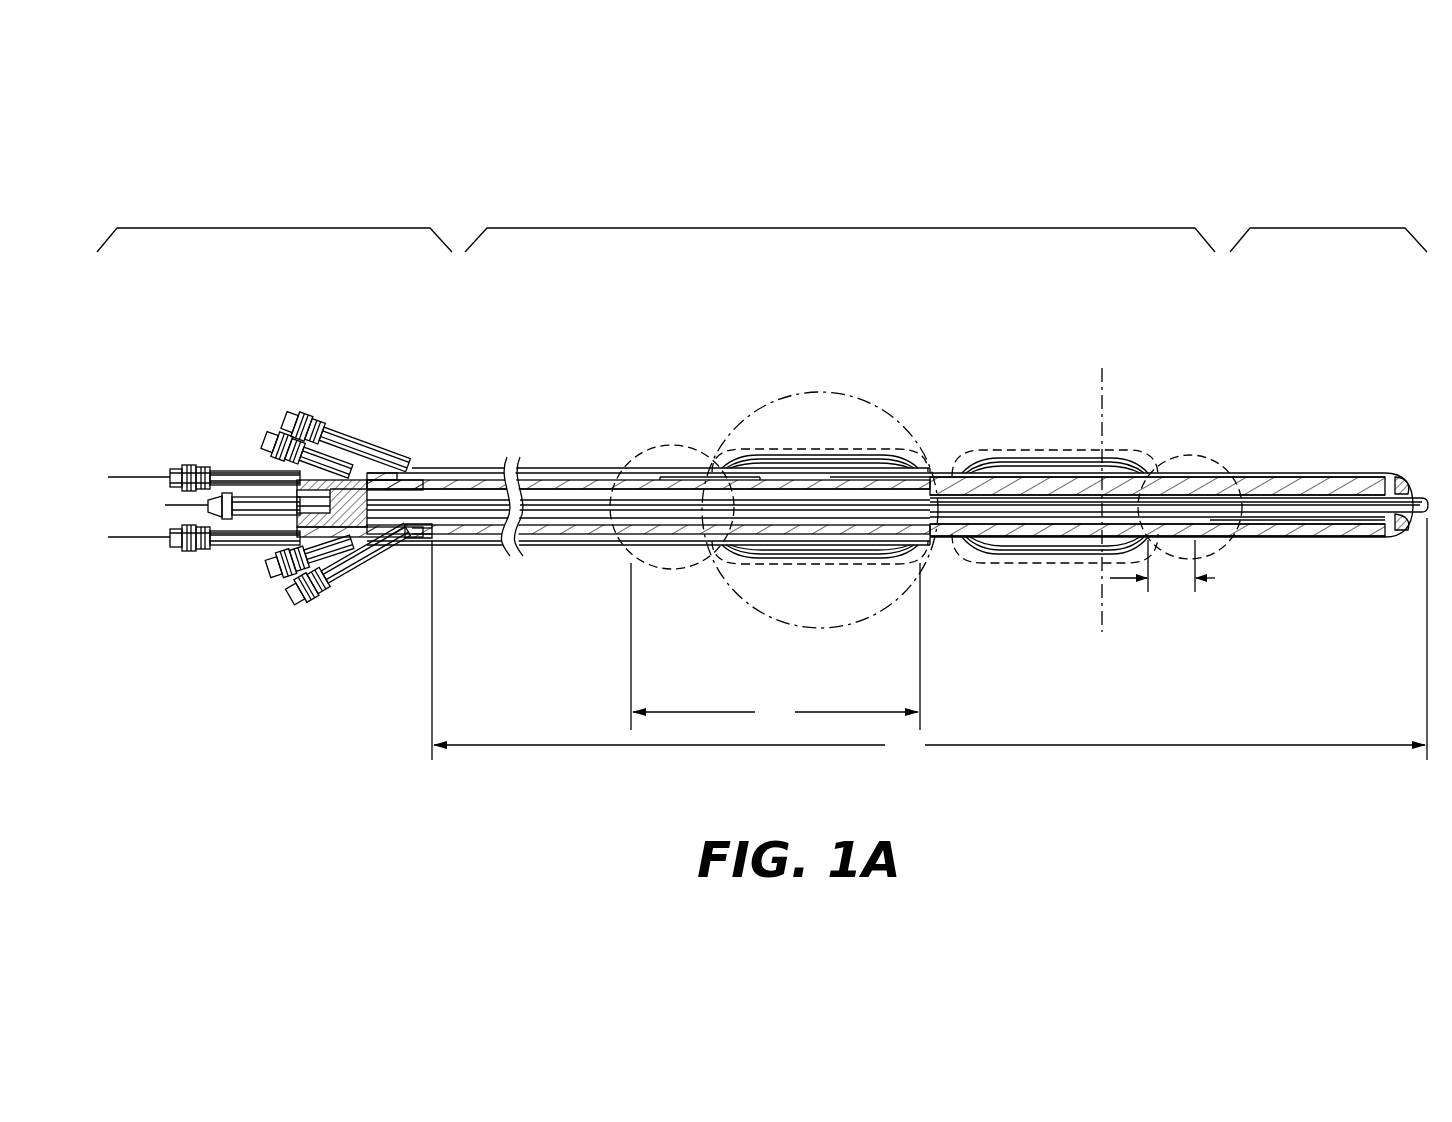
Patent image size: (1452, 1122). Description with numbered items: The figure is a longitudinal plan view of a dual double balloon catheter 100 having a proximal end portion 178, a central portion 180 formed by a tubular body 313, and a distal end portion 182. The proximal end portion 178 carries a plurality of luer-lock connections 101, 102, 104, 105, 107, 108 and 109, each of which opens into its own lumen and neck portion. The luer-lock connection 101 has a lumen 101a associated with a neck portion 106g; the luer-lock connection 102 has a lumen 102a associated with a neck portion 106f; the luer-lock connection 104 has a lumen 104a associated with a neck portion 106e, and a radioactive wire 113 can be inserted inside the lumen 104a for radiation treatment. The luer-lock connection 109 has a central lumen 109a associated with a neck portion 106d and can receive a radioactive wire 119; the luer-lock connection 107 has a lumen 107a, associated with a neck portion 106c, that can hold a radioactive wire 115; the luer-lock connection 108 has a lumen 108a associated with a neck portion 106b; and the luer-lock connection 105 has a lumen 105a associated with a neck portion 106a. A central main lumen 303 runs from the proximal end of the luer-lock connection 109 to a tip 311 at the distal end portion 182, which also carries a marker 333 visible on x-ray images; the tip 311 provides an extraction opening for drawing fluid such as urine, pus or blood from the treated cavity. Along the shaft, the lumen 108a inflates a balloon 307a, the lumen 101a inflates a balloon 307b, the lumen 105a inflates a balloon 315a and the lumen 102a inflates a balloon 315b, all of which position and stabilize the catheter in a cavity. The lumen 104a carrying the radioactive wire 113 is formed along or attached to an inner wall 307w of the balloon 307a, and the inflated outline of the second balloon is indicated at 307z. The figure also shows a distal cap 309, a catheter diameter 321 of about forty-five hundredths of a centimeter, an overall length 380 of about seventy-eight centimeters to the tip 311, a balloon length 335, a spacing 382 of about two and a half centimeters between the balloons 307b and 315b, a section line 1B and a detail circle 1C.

The dual double balloon catheter 100 is at (1040, 130).
The proximal end portion 178 is at (285, 227).
The central portion 180 is at (777, 227).
The distal end portion 182 is at (1287, 227).
The luer-lock connection 101 is at (312, 584).
The lumen 101a is at (295, 594).
The luer-lock connection 102 is at (272, 576).
The lumen 102a is at (273, 567).
The luer-lock connection 104 is at (178, 552).
The lumen 104a is at (838, 455).
The luer-lock connection 105 is at (335, 440).
The lumen 105a is at (269, 342).
The neck portion 106a is at (312, 413).
The neck portion 106b is at (325, 365).
The neck portion 106c is at (220, 464).
The neck portion 106d is at (208, 552).
The neck portion 106e is at (268, 591).
The neck portion 106f is at (349, 596).
The neck portion 106g is at (410, 540).
The luer-lock connection 107 is at (198, 466).
The lumen 107a is at (210, 498).
The luer-lock connection 108 is at (278, 405).
The lumen 108a is at (765, 472).
The luer-lock connection 109 is at (205, 504).
The central lumen 109a is at (147, 500).
The radioactive wire 113 is at (738, 452).
The radioactive wire 115 is at (104, 477).
The radioactive wire 119 is at (122, 470).
The central main lumen 303 is at (603, 534).
The balloon 307a is at (822, 572).
The balloon 307b is at (1030, 565).
The inner wall 307w is at (862, 575).
The balloon inflated outline 307z is at (985, 585).
The distal tip 309 is at (1372, 473).
The tip 311 is at (1434, 470).
The tubular body 313 is at (500, 468).
The balloon 315a is at (668, 445).
The balloon 315b is at (1215, 450).
The diameter 321 is at (936, 580).
The marker 333 is at (1397, 477).
The balloon length 335 is at (775, 646).
The length 380 is at (929, 639).
The spacing 382 is at (1172, 585).
The section line 1B is at (1102, 372).
The detail circle 1C is at (888, 400).